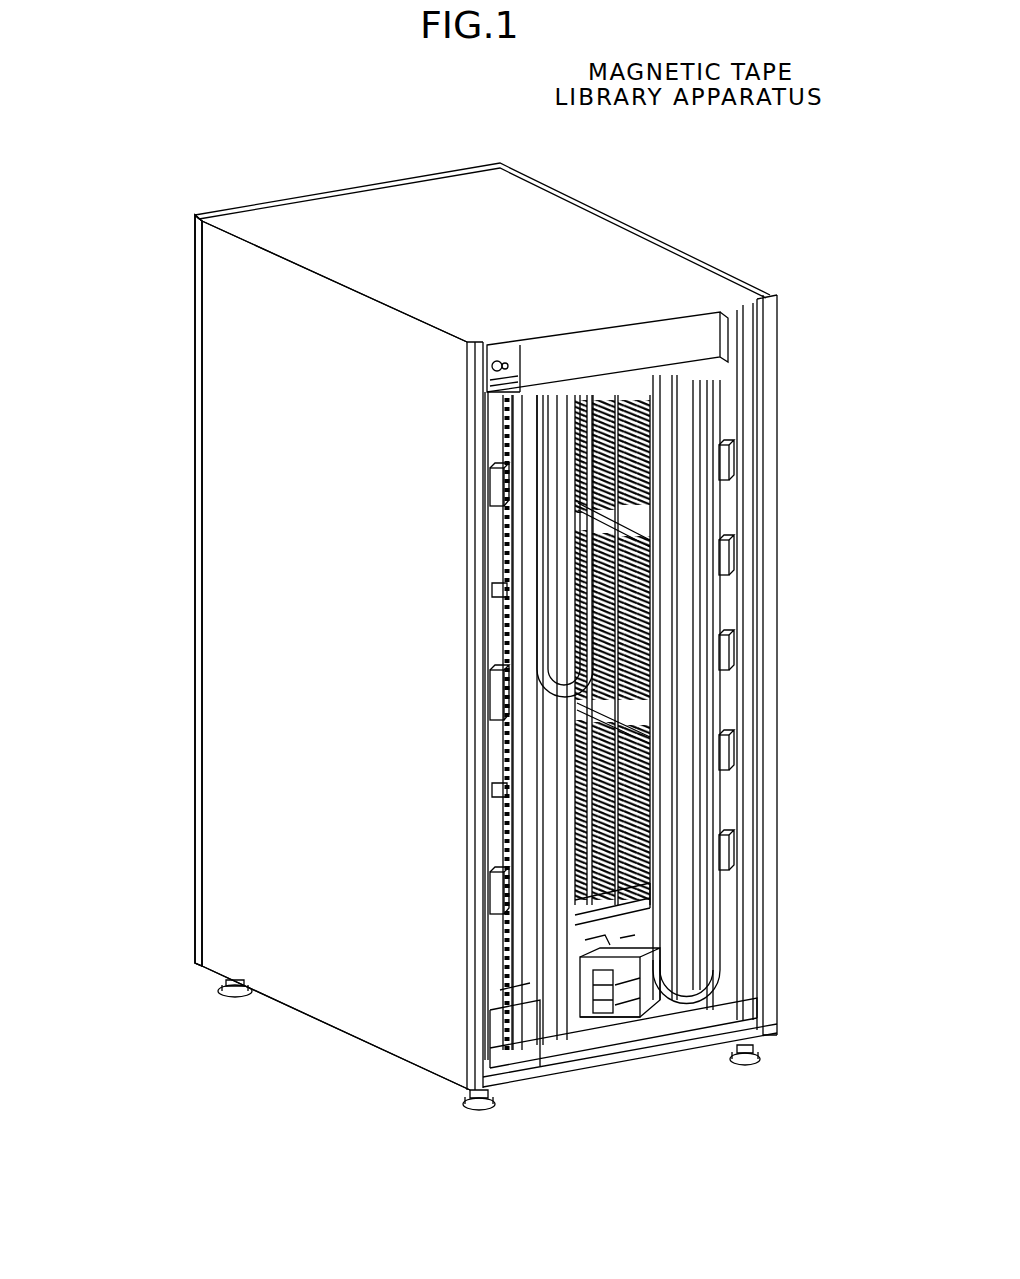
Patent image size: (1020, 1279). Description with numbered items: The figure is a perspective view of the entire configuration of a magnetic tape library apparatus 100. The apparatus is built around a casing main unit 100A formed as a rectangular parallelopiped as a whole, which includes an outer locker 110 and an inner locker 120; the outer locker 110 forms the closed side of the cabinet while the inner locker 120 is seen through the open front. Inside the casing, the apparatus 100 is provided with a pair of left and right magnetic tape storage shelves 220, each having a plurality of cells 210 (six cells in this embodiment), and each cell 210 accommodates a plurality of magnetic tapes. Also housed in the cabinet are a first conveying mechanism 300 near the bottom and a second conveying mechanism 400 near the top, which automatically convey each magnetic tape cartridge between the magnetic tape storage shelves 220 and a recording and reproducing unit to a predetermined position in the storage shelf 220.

The magnetic tape library apparatus 100 is at (662, 197).
The casing main unit 100A is at (227, 593).
The outer locker 110 is at (245, 450).
The inner locker 120 is at (727, 378).
The cell 210 is at (597, 563).
The magnetic tape storage shelf 220 is at (648, 423).
The first conveying mechanism 300 is at (621, 970).
The second conveying mechanism 400 is at (623, 393).